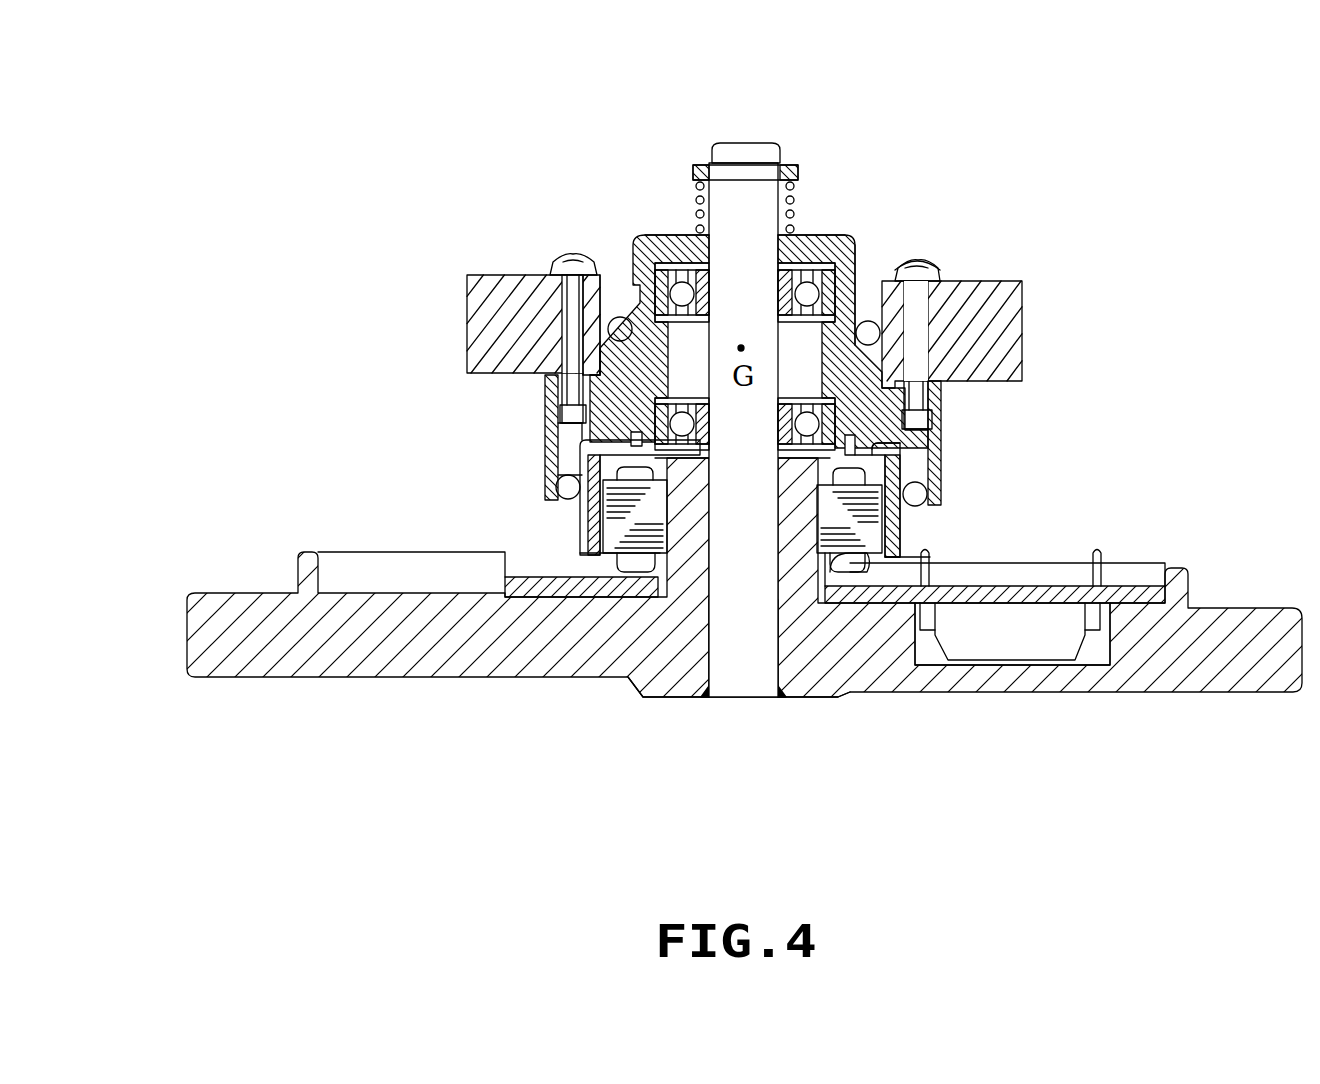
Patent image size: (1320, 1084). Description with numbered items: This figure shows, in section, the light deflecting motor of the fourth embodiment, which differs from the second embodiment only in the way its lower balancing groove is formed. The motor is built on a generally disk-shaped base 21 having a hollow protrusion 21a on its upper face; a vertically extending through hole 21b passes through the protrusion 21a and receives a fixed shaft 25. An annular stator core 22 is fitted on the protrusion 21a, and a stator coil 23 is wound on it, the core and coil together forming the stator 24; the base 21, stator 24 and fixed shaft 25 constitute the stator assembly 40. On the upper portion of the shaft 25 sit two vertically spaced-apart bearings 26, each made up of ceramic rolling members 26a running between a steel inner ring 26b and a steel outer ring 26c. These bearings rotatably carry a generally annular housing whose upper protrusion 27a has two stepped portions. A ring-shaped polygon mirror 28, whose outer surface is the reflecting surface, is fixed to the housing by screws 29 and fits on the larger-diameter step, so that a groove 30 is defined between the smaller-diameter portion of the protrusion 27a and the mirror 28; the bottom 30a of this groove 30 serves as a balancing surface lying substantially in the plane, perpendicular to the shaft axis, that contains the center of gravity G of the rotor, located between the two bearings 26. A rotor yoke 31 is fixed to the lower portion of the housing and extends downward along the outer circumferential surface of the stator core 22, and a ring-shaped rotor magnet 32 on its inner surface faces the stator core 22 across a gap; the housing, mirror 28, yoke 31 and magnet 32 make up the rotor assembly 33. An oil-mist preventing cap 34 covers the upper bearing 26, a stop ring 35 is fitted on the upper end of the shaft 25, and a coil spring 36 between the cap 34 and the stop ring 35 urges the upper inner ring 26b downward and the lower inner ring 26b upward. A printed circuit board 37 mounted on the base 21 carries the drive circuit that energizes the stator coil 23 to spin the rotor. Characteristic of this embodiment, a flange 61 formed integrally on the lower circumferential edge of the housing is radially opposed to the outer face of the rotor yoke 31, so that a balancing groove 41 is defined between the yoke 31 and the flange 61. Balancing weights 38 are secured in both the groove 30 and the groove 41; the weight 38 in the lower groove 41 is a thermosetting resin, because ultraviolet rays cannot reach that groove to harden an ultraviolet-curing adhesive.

The base 21 is at (1282, 606).
The hollow protrusion 21a is at (857, 605).
The through hole 21b is at (712, 672).
The stator core 22 is at (870, 467).
The stator coil 23 is at (928, 560).
The stator 24 is at (902, 450).
The fixed shaft 25 is at (700, 650).
The bearings 26 is at (630, 290).
The rolling members 26a is at (684, 275).
The inner ring 26b is at (806, 270).
The outer ring 26c is at (858, 300).
The upper protrusion 27a is at (592, 362).
The polygon mirror 28 is at (1022, 300).
The screws 29 is at (556, 262).
The groove 30 is at (605, 297).
The bottom of the groove 30a is at (605, 330).
The rotor yoke 31 is at (582, 530).
The rotor magnet 32 is at (582, 500).
The rotor assembly 33 is at (945, 406).
The oil-mist preventing cap 34 is at (640, 238).
The stop ring 35 is at (790, 158).
The coil spring 36 is at (693, 183).
The printed circuit board 37 is at (510, 582).
The balancing weight 38 is at (880, 335).
The stator assembly 40 is at (627, 694).
The balancing groove 41 is at (560, 470).
The flange 61 is at (548, 432).